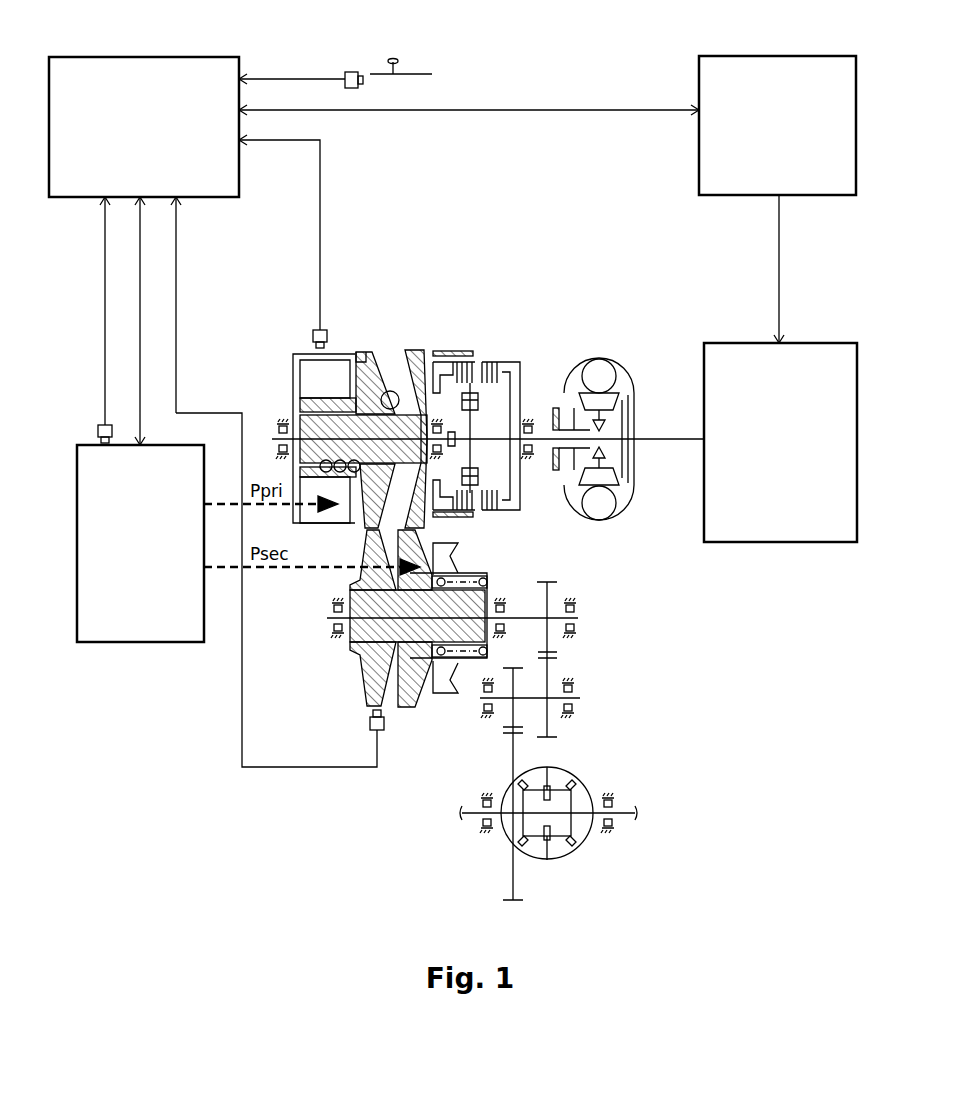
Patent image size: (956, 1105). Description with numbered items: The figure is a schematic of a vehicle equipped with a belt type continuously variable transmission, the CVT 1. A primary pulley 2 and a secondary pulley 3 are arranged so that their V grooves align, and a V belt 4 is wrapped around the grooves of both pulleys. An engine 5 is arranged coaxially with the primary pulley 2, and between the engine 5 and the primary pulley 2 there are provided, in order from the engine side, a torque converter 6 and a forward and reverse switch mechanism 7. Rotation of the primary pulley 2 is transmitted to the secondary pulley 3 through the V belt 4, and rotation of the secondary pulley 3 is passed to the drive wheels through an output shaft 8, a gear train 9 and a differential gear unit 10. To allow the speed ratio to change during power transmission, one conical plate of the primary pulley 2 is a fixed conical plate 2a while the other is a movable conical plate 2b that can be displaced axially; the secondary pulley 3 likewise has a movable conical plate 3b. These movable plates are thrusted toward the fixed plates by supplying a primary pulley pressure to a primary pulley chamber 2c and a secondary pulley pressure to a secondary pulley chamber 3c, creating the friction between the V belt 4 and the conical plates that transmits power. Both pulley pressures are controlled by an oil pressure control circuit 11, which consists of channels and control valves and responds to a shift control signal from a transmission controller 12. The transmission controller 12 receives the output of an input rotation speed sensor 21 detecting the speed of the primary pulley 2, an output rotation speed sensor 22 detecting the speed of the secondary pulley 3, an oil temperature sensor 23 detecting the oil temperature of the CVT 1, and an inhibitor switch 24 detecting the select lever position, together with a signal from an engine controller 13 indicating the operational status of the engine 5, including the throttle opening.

The CVT 1 is at (280, 308).
The primary pulley 2 is at (401, 340).
The fixed conical plate 2a is at (418, 349).
The movable conical plate 2b is at (364, 350).
The primary pulley chamber 2c is at (312, 385).
The secondary pulley 3 is at (457, 720).
The movable conical plate 3b is at (398, 710).
The secondary pulley chamber 3c is at (427, 692).
The V belt 4 is at (389, 390).
The engine 5 is at (748, 340).
The torque converter 6 is at (589, 325).
The forward and reverse switch mechanism 7 is at (469, 336).
The output shaft 8 is at (520, 612).
The gear train 9 is at (598, 644).
The differential gear unit 10 is at (597, 760).
The oil pressure control circuit 11 is at (132, 630).
The transmission controller 12 is at (138, 64).
The engine controller 13 is at (798, 64).
The input rotation speed sensor 21 is at (318, 329).
The output rotation speed sensor 22 is at (368, 715).
The oil temperature sensor 23 is at (103, 424).
The inhibitor switch 24 is at (352, 72).